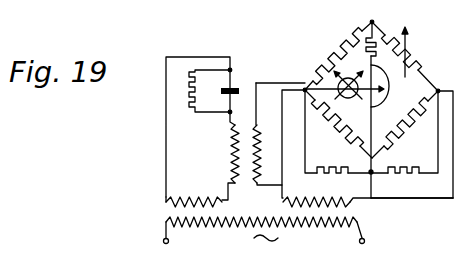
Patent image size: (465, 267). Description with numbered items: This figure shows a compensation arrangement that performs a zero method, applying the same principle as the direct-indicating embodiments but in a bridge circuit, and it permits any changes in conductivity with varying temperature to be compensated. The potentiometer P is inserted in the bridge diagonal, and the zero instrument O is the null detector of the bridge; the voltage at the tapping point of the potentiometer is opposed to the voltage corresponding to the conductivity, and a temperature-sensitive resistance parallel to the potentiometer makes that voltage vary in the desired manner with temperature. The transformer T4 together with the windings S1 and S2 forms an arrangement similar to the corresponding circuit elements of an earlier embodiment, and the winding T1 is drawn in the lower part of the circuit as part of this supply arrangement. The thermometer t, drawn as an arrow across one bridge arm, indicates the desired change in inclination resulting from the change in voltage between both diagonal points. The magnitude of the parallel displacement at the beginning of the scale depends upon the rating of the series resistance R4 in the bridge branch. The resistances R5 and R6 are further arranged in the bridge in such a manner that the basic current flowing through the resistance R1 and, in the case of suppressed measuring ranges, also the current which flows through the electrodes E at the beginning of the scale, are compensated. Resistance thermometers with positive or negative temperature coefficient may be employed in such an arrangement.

The resistance R1 is at (201, 91).
The electrodes E is at (233, 79).
The transformer T4 is at (231, 152).
The winding S2 is at (213, 198).
The transformer coil T1 is at (176, 213).
The winding S1 is at (325, 203).
The series resistance R4 is at (338, 124).
The resistance R5 is at (332, 160).
The resistance R6 is at (404, 160).
The zero instrument O is at (344, 75).
The potentiometer P is at (384, 87).
The thermometer t is at (410, 52).